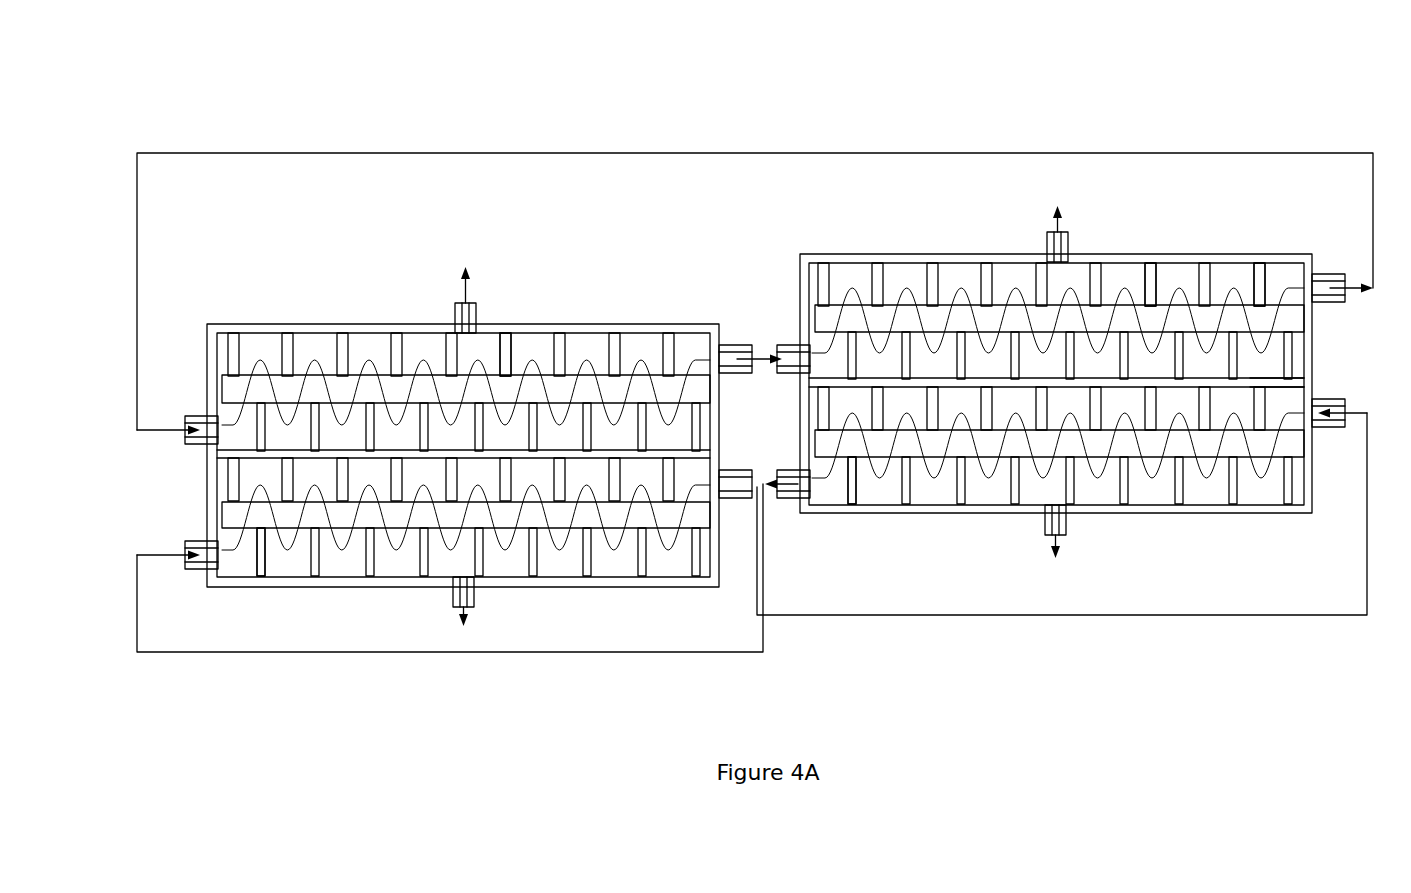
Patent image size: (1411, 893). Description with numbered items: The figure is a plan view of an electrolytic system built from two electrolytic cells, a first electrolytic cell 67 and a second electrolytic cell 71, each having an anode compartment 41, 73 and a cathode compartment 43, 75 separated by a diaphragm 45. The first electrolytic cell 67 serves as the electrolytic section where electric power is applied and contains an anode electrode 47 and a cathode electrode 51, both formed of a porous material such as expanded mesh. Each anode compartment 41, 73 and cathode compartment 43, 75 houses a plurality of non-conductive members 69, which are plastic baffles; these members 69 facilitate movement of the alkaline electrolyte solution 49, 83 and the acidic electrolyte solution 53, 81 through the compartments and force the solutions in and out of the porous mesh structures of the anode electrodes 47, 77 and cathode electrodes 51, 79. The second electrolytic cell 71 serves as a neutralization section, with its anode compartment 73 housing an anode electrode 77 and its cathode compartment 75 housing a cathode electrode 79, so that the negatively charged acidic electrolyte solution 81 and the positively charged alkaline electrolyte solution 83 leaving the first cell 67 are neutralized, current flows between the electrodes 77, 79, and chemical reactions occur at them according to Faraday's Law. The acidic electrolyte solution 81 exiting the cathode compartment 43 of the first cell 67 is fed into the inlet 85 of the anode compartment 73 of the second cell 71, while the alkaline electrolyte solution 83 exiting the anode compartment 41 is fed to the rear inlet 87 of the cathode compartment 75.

The anode compartment 41 is at (626, 584).
The cathode compartment 43 is at (466, 338).
The diaphragm 45 is at (230, 453).
The anode electrode 47 is at (340, 515).
The alkaline electrolyte solution 49 is at (505, 560).
The cathode electrode 51 is at (366, 387).
The acidic electrolyte solution 53 is at (597, 345).
The first electrolytic cell 67 is at (322, 126).
The non-conductive members 69 is at (502, 343).
The second electrolytic cell 71 is at (1244, 652).
The anode compartment 73 is at (1049, 278).
The cathode compartment 75 is at (1258, 514).
The anode electrode 77 is at (962, 320).
The cathode electrode 79 is at (937, 445).
The acidic electrolyte solution 81 is at (760, 352).
The alkaline electrolyte solution 83 is at (1142, 493).
The inlet 85 is at (788, 358).
The rear inlet 87 is at (1340, 408).